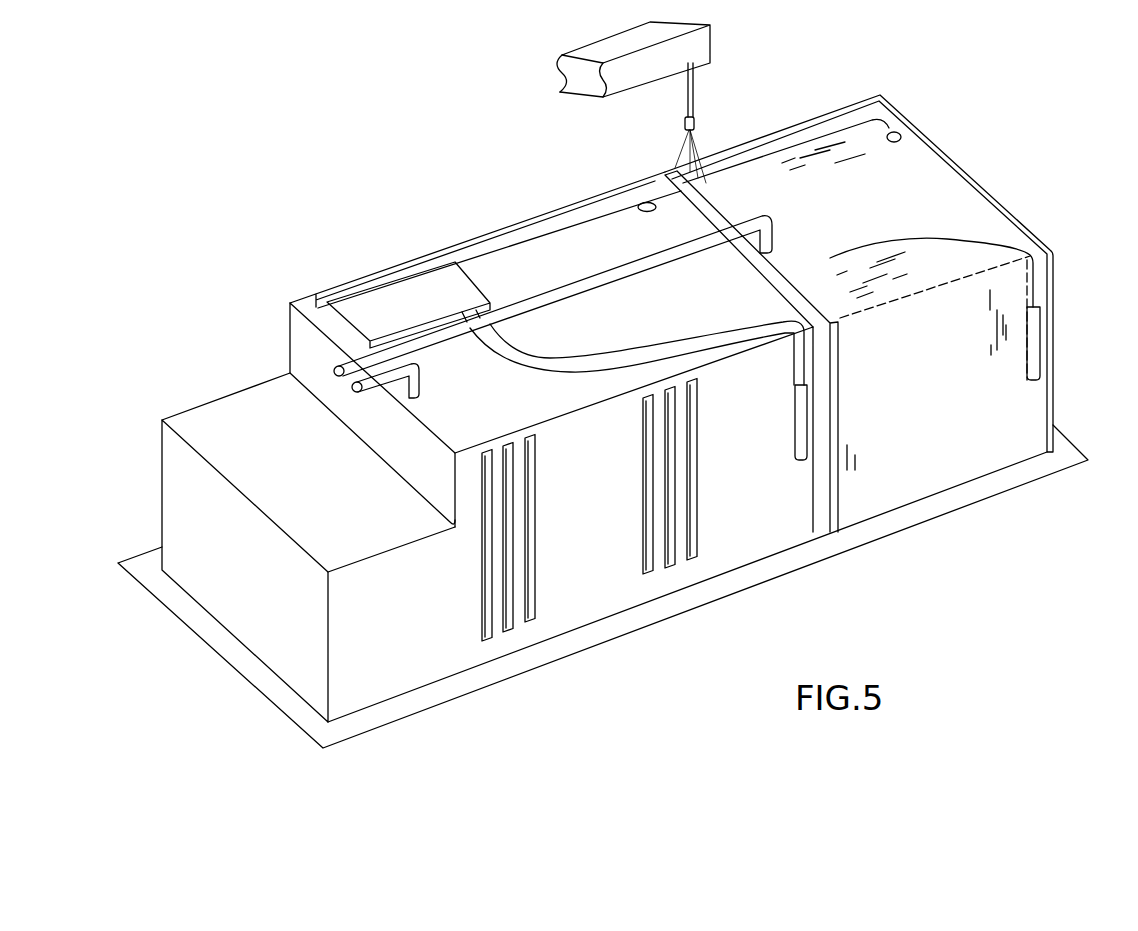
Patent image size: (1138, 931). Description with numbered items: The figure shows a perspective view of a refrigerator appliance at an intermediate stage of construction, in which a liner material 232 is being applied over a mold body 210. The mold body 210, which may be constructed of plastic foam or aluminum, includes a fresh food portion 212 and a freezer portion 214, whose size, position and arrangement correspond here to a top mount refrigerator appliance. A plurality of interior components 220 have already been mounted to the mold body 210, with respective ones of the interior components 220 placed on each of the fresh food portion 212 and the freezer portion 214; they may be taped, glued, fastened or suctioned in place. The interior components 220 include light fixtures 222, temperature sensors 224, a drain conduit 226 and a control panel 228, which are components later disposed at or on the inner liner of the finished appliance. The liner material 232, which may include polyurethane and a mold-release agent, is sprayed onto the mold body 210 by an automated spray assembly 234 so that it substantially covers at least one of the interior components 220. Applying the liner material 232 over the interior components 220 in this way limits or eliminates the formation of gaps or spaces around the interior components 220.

The mold body 210 is at (681, 602).
The fresh food portion 212 is at (316, 299).
The freezer portion 214 is at (823, 488).
The interior components 220 is at (353, 392).
The light fixtures 222 is at (795, 440).
The temperature sensors 224 is at (648, 203).
The drain conduit 226 is at (440, 338).
The control panel 228 is at (432, 277).
The liner material 232 is at (933, 198).
The automated spray assembly 234 is at (692, 52).